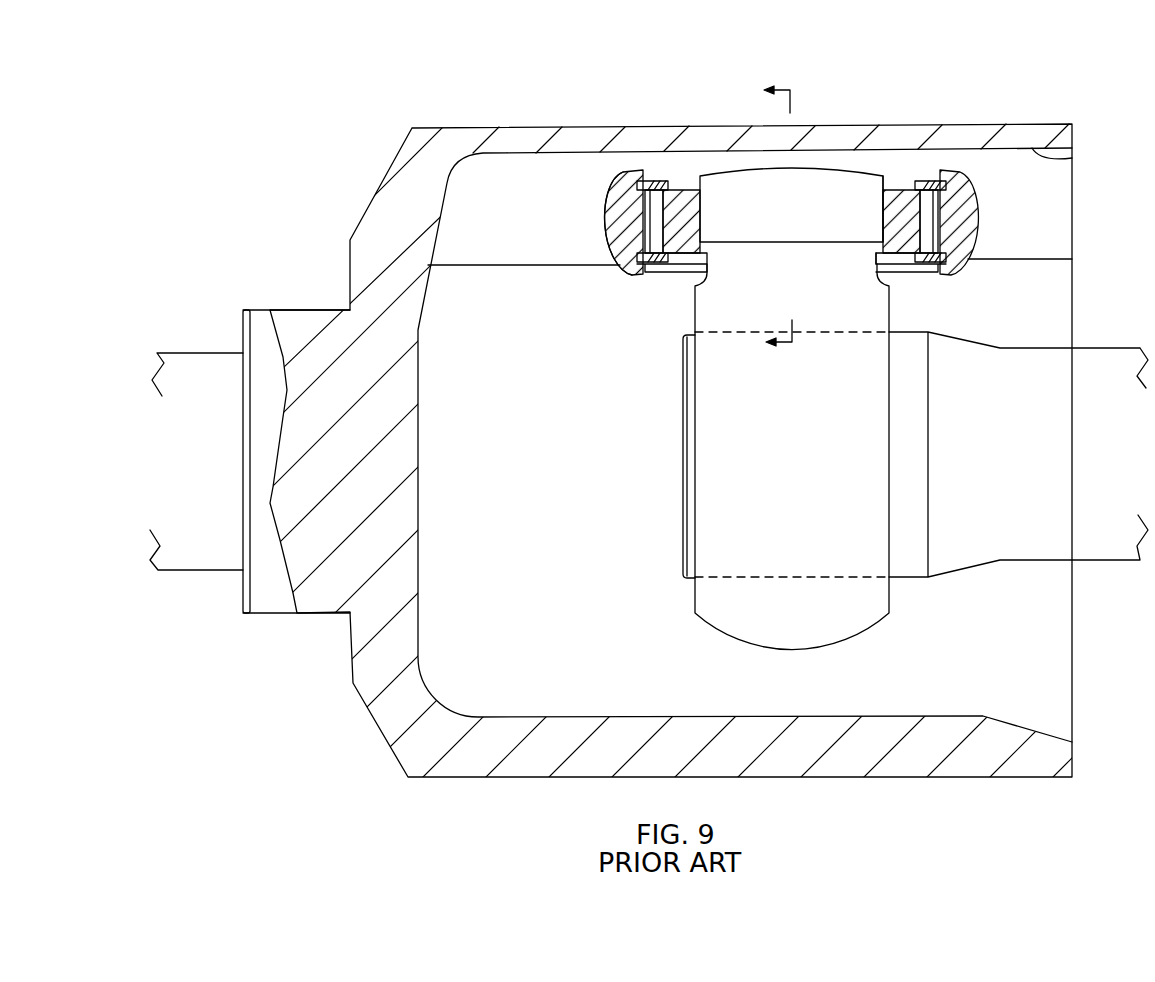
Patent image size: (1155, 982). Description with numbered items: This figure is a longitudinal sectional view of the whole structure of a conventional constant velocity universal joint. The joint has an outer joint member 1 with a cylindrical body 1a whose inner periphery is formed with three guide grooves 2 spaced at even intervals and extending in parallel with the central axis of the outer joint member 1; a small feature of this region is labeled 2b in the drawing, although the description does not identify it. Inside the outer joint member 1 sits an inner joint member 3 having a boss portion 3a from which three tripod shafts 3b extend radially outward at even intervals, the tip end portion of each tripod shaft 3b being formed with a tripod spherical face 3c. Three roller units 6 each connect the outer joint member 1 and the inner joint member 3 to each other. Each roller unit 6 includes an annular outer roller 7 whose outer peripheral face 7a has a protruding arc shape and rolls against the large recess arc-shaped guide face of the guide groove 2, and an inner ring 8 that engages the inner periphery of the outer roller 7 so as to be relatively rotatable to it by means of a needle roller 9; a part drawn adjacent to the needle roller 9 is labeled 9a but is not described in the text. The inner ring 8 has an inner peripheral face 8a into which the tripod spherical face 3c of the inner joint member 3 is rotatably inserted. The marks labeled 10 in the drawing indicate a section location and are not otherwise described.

The outer joint member 1 is at (512, 128).
The cylindrical body 1a is at (1027, 128).
The guide groove 2 is at (1055, 199).
The notch of outer member 2b is at (1072, 158).
The inner joint member 3 is at (695, 602).
The boss portion 3a is at (713, 465).
The tripod shaft 3b is at (813, 187).
The tripod spherical face 3c is at (885, 190).
The roller unit 6 is at (948, 163).
The outer roller 7 is at (580, 222).
The outer peripheral face 7a is at (610, 213).
The inner ring 8 is at (696, 177).
The inner peripheral face 8a is at (702, 191).
The needle roller 9 is at (618, 197).
The retainer 9a is at (660, 182).
The section line 10 is at (770, 220).